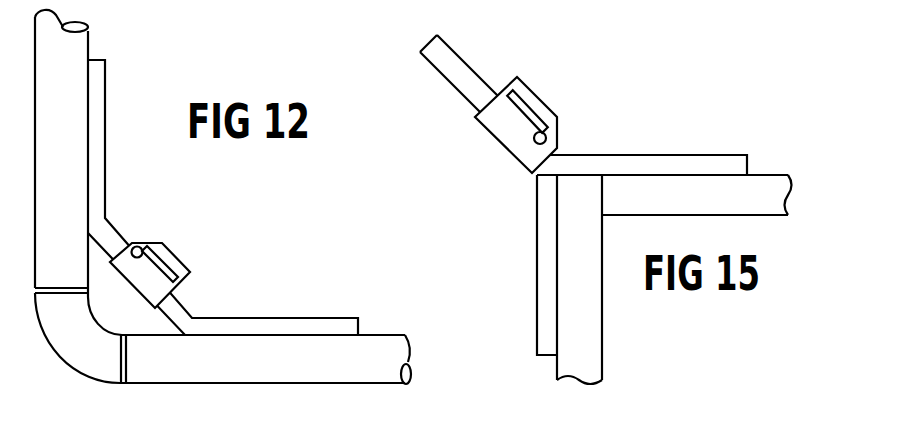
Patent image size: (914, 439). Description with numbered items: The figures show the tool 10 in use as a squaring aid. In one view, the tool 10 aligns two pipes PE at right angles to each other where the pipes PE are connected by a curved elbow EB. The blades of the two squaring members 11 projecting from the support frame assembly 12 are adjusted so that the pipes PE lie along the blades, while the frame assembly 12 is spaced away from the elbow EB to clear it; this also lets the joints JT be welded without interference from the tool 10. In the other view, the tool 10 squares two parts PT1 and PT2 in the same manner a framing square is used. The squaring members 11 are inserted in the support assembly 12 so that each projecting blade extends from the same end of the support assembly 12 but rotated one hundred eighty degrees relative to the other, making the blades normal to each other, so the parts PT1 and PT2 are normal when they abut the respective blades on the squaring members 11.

In FIG. 12, the tool 10 is at (198, 279).
In FIG. 15, the tool 10 is at (525, 64).
In FIG. 12, the squaring members 11 is at (107, 192).
In FIG. 15, the squaring members 11 is at (605, 151).
In FIG. 12, the support frame assembly 12 is at (164, 240).
In FIG. 15, the support frame assembly 12 is at (554, 99).
In FIG. 12, the pipes PE is at (77, 97).
In FIG. 12, the curved elbow EB is at (80, 362).
In FIG. 12, the joints JT is at (120, 376).
In FIG. 15, the first part PT1 is at (760, 187).
In FIG. 15, the second part PT2 is at (592, 363).